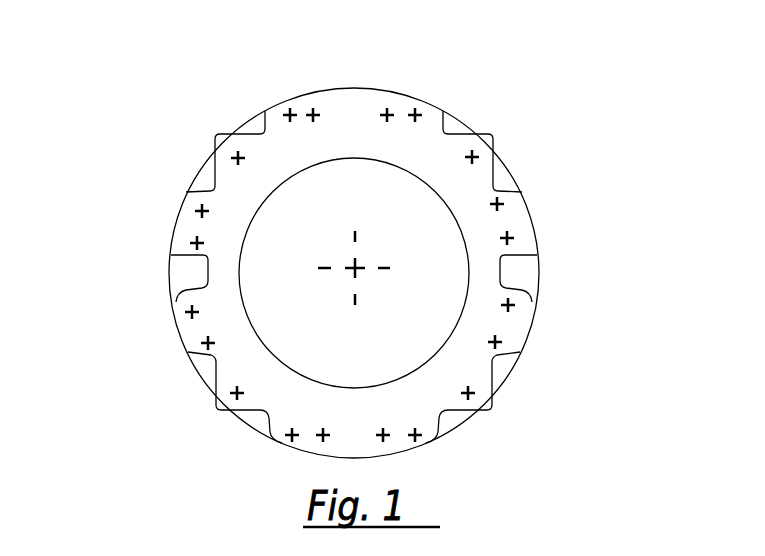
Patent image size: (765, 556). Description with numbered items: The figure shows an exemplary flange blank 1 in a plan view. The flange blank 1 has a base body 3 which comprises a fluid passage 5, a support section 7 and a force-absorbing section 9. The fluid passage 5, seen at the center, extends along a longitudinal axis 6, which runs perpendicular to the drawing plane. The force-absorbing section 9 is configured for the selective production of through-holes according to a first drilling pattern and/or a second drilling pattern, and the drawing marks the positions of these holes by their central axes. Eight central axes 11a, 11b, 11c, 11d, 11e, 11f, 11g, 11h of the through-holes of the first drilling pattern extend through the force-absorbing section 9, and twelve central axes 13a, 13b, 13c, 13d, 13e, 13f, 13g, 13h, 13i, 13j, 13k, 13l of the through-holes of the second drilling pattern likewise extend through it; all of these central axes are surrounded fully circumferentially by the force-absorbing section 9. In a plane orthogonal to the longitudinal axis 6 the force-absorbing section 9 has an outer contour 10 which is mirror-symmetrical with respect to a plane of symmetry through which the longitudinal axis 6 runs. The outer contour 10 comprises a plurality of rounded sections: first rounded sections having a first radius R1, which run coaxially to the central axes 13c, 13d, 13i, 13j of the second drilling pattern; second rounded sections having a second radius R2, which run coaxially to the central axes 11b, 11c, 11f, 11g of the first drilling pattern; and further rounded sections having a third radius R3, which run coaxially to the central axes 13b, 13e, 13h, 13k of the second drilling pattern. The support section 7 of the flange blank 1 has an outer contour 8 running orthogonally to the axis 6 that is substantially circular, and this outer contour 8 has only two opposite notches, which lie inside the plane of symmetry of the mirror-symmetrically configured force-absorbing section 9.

The flange blank 1 is at (213, 103).
The base body 3 is at (505, 378).
The fluid passage 5 is at (380, 195).
The longitudinal axis 6 is at (369, 248).
The support section 7 is at (532, 276).
The outer contour of the support section 8 is at (540, 247).
The force-absorbing section 9 is at (238, 332).
The outer contour of the force-absorbing section 10 is at (252, 132).
The central axis 11a is at (283, 90).
The central axis 11b is at (178, 195).
The central axis 11c is at (183, 353).
The central axis 11d is at (287, 445).
The central axis 11e is at (430, 447).
The central axis 11f is at (523, 354).
The central axis 11g is at (520, 197).
The central axis 11h is at (430, 95).
The central axis 13a is at (312, 93).
The central axis 13b is at (228, 135).
The central axis 13c is at (180, 234).
The central axis 13d is at (174, 313).
The central axis 13e is at (213, 403).
The central axis 13f is at (318, 415).
The central axis 13g is at (383, 420).
The central axis 13h is at (447, 390).
The central axis 13i is at (490, 302).
The central axis 13j is at (535, 237).
The central axis 13k is at (490, 138).
The central axis 13l is at (397, 92).
The first radius R1 is at (180, 260).
The second radius R2 is at (215, 188).
The third radius R3 is at (233, 140).